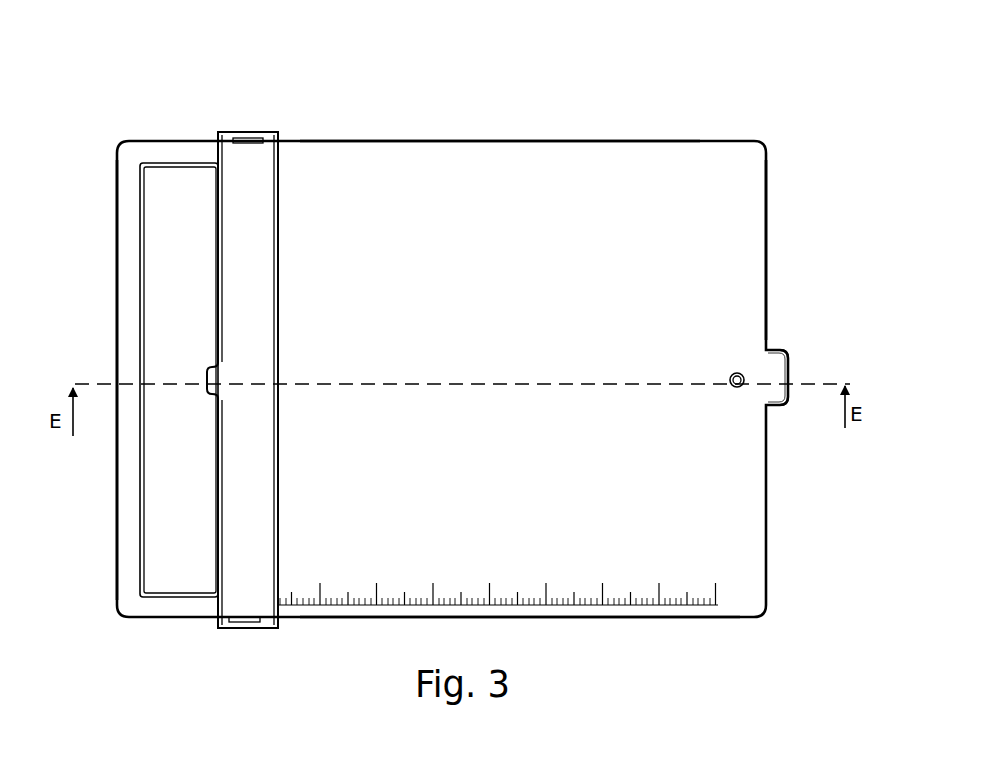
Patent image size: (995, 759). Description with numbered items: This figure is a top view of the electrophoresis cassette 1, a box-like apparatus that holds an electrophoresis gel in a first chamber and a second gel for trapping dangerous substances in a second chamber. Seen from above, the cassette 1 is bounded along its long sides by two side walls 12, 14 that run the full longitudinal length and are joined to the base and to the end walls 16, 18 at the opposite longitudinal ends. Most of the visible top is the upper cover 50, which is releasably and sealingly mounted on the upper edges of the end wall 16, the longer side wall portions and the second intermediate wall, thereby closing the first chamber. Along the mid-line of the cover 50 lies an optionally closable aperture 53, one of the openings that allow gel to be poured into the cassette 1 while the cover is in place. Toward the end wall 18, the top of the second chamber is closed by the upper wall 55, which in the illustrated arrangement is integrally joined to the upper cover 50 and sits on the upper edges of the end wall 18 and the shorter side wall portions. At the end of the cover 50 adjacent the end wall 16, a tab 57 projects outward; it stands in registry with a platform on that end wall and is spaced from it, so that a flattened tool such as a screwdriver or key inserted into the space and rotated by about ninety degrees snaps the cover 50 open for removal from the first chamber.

The cassette 1 is at (106, 112).
The side wall 12 is at (673, 620).
The side wall 14 is at (507, 143).
The end wall 16 is at (768, 208).
The end wall 18 is at (132, 300).
The upper cover 50 is at (631, 162).
The closable aperture 53 is at (742, 385).
The upper wall 55 is at (175, 218).
The tab 57 is at (780, 347).